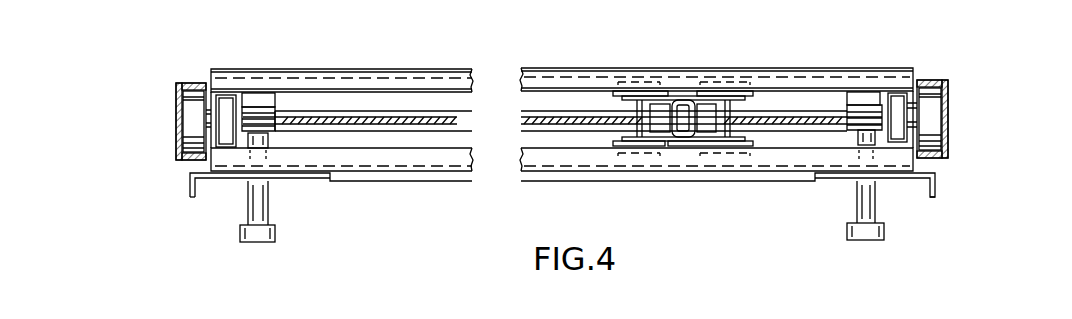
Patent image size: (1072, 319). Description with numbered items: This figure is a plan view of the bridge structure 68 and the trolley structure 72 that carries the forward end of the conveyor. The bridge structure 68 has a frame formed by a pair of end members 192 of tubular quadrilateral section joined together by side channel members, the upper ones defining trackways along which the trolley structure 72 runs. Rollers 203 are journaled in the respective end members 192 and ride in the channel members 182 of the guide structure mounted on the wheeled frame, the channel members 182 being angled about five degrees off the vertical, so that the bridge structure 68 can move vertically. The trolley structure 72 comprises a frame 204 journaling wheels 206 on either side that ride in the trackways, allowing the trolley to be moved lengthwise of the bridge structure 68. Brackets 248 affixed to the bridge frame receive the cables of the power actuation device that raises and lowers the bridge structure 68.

The bridge structure 68 is at (929, 57).
The trolley structure 72 is at (722, 83).
The channel members 182 is at (177, 126).
The end members 192 is at (227, 93).
The rollers 203 is at (193, 148).
The frame 204 is at (663, 95).
The wheels 206 is at (755, 92).
The brackets 248 is at (195, 200).